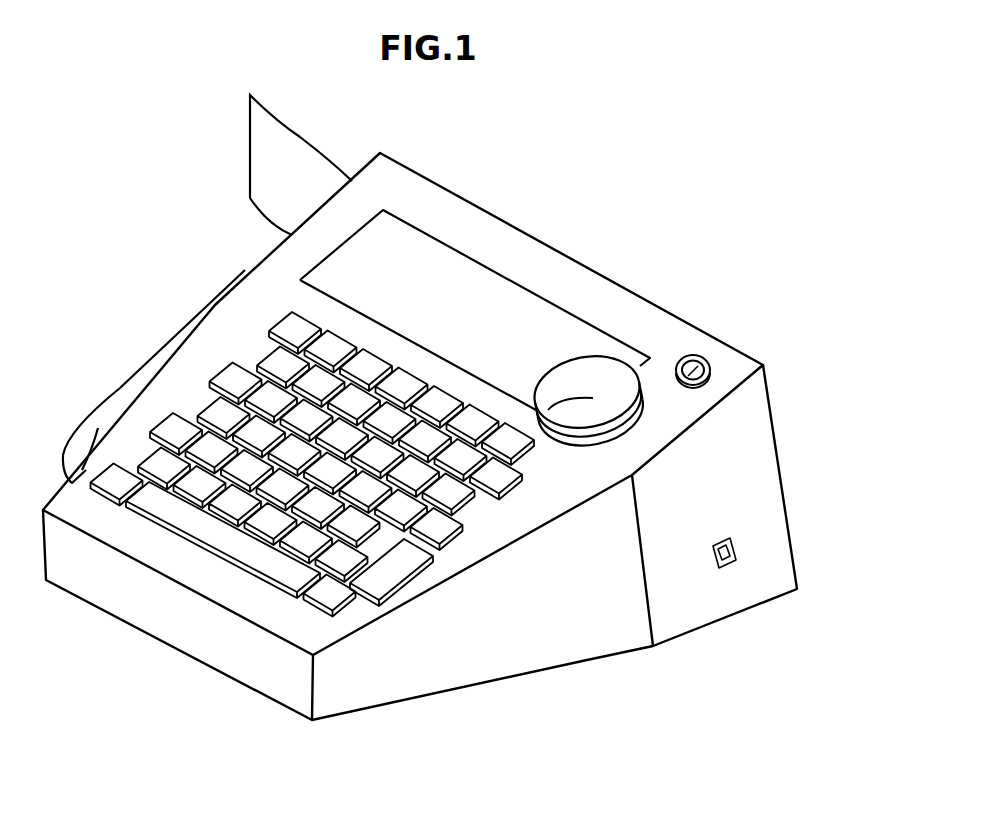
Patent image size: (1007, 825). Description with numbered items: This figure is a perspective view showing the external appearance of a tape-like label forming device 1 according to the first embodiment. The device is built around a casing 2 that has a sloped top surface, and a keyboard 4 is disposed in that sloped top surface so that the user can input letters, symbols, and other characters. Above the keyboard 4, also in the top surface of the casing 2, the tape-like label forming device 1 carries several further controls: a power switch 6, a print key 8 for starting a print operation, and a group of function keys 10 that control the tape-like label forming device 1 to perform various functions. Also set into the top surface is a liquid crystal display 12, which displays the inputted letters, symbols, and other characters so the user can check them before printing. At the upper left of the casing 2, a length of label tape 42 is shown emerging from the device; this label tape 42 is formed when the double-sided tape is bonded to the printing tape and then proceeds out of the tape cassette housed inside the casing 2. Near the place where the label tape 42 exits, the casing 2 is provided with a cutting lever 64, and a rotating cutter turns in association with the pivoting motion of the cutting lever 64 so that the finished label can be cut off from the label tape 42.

The tape-like label forming device 1 is at (420, 435).
The casing 2 is at (603, 273).
The keyboard 4 is at (343, 547).
The power switch 6 is at (688, 353).
The print key 8 is at (544, 410).
The group of function keys 10 is at (313, 502).
The liquid crystal display 12 is at (460, 300).
The label tape 42 is at (272, 163).
The cutting lever 64 is at (88, 428).